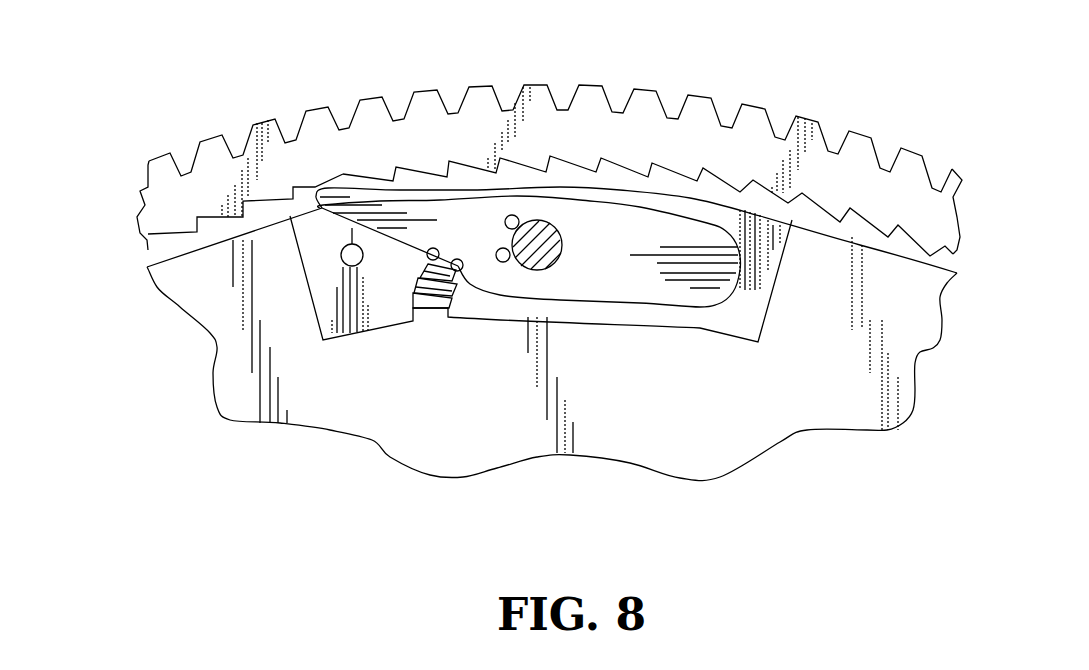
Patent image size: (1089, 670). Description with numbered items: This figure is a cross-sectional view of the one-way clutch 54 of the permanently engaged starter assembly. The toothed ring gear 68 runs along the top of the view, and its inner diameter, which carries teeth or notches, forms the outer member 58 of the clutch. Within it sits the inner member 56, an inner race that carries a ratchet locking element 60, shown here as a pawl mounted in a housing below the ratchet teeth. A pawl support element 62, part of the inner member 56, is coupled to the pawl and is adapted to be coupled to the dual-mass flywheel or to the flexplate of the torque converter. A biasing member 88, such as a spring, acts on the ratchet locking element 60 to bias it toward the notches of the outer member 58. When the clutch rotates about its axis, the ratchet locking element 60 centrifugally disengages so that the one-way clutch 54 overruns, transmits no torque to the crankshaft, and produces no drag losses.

The one-way clutch 54 is at (823, 330).
The inner member 56 is at (626, 357).
The outer member 58 is at (819, 214).
The ratchet locking elements 60 is at (612, 233).
The pawl support element 62 is at (737, 323).
The ring gear 68 is at (163, 203).
The biasing member 88 is at (437, 300).